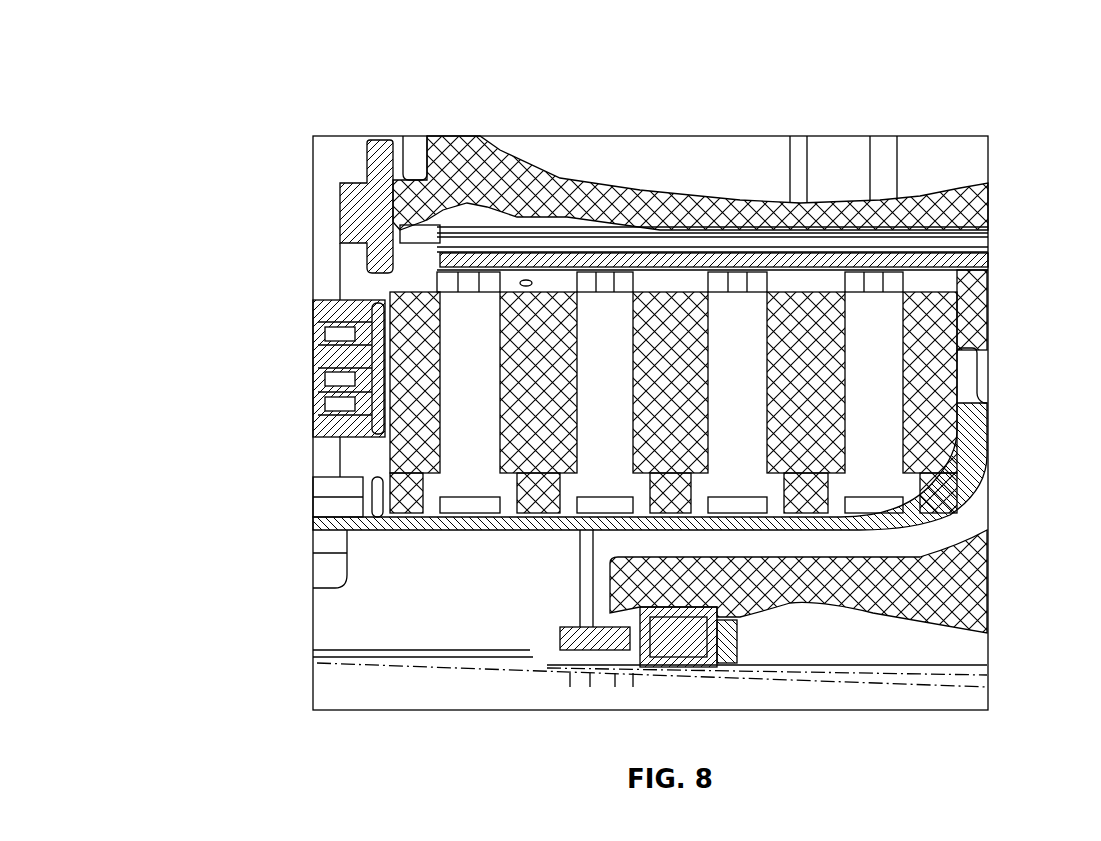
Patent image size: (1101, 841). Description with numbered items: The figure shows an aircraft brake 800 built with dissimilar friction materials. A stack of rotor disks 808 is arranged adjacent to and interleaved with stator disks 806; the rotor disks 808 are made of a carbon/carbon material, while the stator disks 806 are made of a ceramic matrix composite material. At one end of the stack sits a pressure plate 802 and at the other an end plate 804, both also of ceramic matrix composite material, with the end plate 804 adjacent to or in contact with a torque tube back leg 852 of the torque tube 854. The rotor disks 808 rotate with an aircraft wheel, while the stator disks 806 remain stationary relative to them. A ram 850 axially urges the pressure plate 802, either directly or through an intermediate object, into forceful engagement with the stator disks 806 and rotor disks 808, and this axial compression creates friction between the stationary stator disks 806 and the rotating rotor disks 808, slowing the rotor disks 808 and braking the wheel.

The aircraft brake 800 is at (240, 98).
The pressure plate 802 is at (387, 295).
The end plate 804 is at (975, 302).
The stator disks 806 is at (531, 300).
The rotor disks 808 is at (600, 300).
The ram 850 is at (312, 333).
The torque tube back leg 852 is at (957, 383).
The torque tube 854 is at (913, 503).